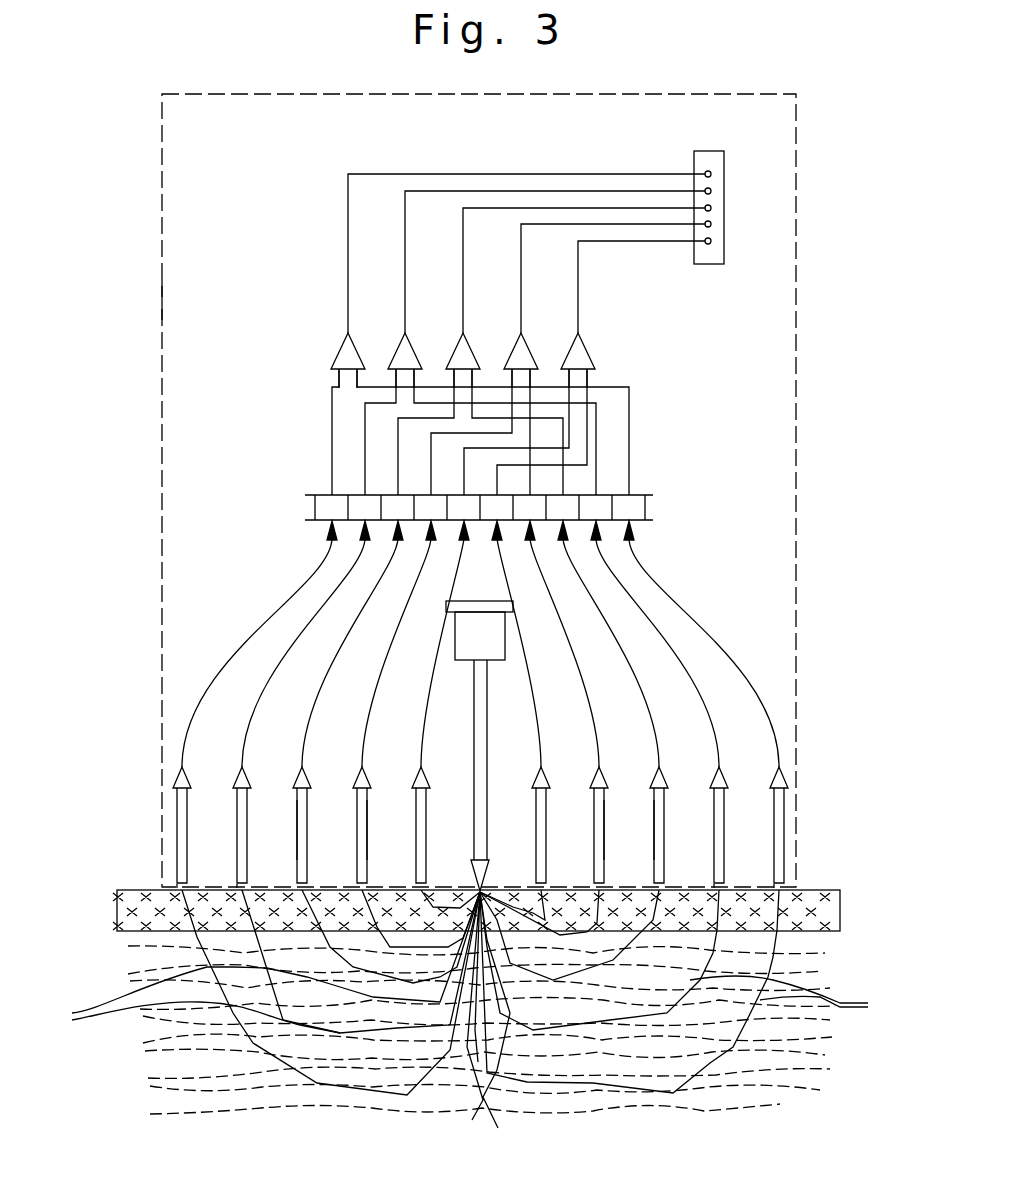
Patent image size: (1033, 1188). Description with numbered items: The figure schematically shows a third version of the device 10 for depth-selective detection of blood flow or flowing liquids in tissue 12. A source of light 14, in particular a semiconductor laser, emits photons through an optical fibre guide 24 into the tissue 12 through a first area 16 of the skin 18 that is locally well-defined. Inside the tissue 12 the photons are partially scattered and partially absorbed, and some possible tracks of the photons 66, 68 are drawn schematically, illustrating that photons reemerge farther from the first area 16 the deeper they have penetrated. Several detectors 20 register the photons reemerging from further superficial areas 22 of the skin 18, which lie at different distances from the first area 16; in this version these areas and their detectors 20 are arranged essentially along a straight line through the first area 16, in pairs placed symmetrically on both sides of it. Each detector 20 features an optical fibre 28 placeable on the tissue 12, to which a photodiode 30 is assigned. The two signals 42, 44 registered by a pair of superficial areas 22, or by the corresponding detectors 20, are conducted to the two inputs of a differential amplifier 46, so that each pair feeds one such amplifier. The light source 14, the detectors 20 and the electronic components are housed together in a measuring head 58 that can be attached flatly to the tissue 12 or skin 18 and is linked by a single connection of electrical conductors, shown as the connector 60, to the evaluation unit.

The device 10 is at (798, 297).
The tissue 12 is at (592, 1007).
The source of light 14 is at (479, 630).
The first area 16 is at (478, 889).
The skin 18 is at (123, 908).
The detectors 20 is at (238, 777).
The further superficial areas 22 is at (777, 890).
The optical fibre guide 24 is at (488, 758).
The optical fibre 28 is at (654, 857).
The photodiode 30 is at (678, 507).
The signal 42 is at (596, 430).
The signal 44 is at (333, 448).
The differential amplifier 46 is at (580, 352).
The measuring head 58 is at (163, 292).
The output connector 60 is at (699, 161).
The track of the photons 66 is at (274, 1009).
The track of the photons 68 is at (691, 991).